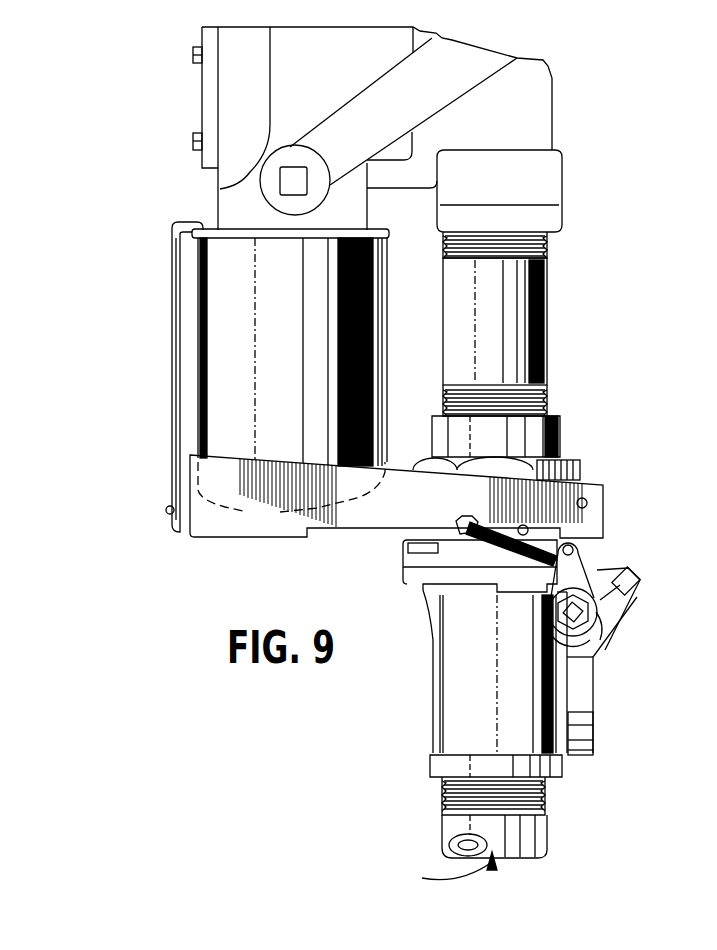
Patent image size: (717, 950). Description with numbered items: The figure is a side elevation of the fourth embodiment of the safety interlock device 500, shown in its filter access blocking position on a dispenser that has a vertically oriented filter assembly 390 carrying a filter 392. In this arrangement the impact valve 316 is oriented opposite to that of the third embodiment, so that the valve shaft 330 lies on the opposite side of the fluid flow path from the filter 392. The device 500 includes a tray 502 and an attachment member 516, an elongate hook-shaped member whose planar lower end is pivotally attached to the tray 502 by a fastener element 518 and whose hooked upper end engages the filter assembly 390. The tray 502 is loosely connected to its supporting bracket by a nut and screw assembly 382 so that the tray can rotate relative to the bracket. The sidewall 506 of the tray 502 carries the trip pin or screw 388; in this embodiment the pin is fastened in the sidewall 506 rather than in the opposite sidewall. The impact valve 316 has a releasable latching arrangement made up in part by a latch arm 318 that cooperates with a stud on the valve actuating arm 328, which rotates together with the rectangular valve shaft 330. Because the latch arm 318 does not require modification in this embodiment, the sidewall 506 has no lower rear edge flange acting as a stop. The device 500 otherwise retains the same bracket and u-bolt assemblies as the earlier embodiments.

The safety interlock device 500 is at (205, 592).
The filter assembly 390 is at (197, 93).
The filter 392 is at (390, 305).
The attachment member 516 is at (172, 345).
The fastener element 518 is at (167, 513).
The sidewall 506 is at (280, 457).
The tray 502 is at (280, 539).
The nut and screw assembly 382 is at (590, 503).
The trip pin or screw 388 is at (520, 523).
The latch arm 318 is at (598, 567).
The valve actuating arm 328 is at (563, 588).
The valve shaft 330 is at (567, 628).
The impact valve 316 is at (433, 680).